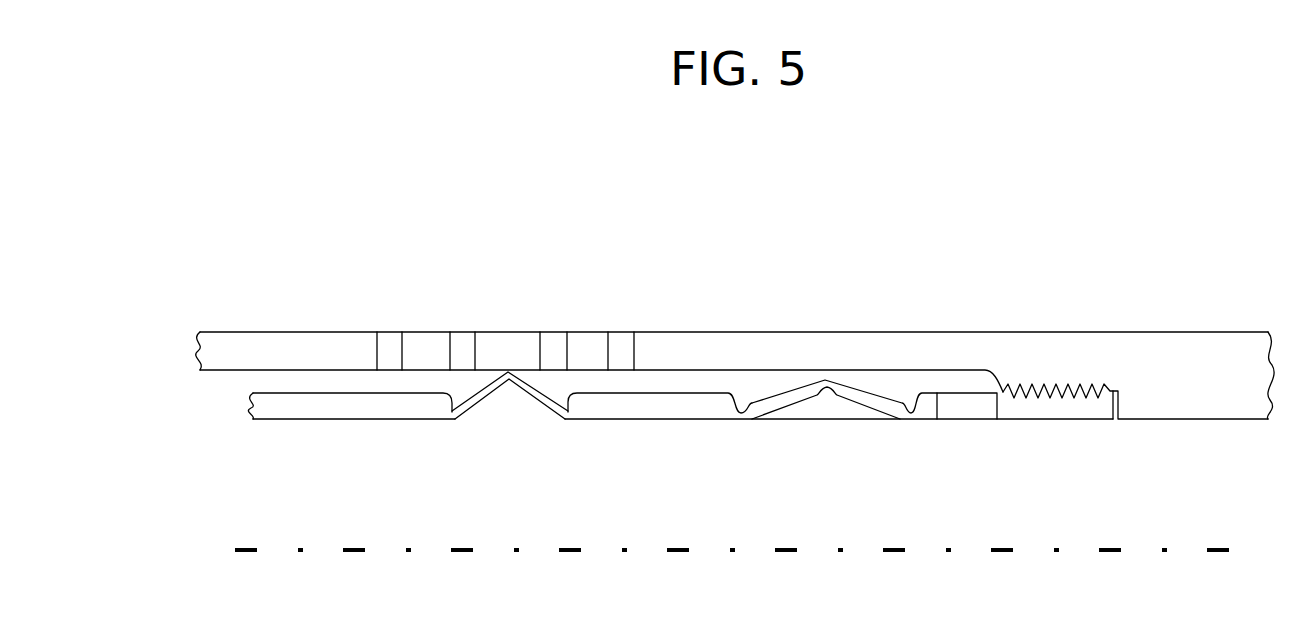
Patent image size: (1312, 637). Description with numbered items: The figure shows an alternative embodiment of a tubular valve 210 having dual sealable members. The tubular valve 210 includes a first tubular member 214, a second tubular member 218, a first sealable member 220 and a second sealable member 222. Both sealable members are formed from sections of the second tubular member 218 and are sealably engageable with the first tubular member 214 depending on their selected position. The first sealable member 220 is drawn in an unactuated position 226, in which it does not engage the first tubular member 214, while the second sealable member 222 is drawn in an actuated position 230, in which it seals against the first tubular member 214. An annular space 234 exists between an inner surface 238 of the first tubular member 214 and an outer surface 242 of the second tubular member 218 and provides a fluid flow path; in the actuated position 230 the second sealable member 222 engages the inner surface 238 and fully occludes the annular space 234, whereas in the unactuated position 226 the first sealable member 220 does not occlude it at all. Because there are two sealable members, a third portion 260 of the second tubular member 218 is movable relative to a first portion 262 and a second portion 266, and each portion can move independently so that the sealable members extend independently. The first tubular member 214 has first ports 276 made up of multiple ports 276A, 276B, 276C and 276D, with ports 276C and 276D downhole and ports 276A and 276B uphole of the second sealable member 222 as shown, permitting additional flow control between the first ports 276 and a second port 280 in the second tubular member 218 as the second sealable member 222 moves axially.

The tubular valve 210 is at (1037, 194).
The first tubular member 214 is at (1127, 330).
The second tubular member 218 is at (337, 420).
The first sealable member 220 is at (796, 412).
The second sealable member 222 is at (478, 414).
The unactuated position 226 is at (827, 414).
The actuated position 230 is at (538, 414).
The annular space 234 is at (697, 380).
The inner surface 238 is at (675, 382).
The outer surface 242 is at (712, 392).
The third portion 260 is at (970, 421).
The first portion 262 is at (677, 421).
The second portion 266 is at (263, 420).
The first ports 276 is at (416, 240).
The port 276A is at (377, 345).
The port 276B is at (450, 345).
The port 276C is at (540, 345).
The port 276D is at (608, 345).
The second port 280 is at (932, 407).